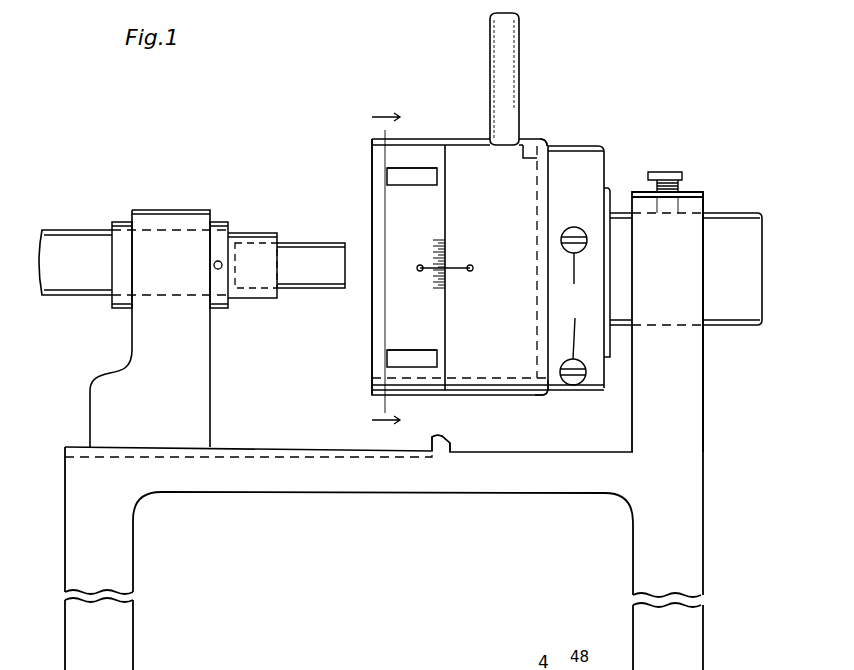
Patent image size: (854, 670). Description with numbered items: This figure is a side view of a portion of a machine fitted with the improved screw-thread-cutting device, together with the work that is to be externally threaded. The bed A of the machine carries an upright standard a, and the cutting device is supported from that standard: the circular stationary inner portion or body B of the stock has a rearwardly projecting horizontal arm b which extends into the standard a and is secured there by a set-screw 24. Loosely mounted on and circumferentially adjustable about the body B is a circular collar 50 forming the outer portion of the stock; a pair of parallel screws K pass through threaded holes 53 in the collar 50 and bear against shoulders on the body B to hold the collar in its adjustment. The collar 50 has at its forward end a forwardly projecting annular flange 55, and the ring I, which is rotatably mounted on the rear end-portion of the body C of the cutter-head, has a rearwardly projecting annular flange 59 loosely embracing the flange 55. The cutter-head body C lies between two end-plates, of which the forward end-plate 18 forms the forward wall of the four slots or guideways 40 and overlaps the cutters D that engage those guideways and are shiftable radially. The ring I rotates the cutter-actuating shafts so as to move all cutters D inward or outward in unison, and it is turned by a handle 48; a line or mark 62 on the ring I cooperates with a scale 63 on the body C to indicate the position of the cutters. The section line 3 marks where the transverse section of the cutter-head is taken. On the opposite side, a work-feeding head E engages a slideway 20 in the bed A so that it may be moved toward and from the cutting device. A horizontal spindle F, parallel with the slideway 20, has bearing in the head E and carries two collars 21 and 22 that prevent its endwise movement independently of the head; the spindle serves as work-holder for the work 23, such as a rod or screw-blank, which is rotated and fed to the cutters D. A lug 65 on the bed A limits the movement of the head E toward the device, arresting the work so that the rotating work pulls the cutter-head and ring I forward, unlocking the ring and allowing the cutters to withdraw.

The section line 3— 3 is at (386, 270).
The forward end-plate 18 is at (372, 343).
The slideway 20 is at (290, 461).
The collar 21 is at (123, 222).
The collar 22 is at (228, 222).
The work 23 is at (312, 280).
The set-screw 24 is at (683, 175).
The slots or guideways 40 is at (415, 395).
The handle 48 is at (510, 54).
The collar 50 is at (592, 160).
The screw-threaded holes 53 is at (608, 373).
The annular flange 55 is at (527, 145).
The annular flange 59 is at (549, 395).
The line or mark 62 is at (465, 263).
The scale 63 is at (436, 246).
The lug 65 is at (435, 440).
The bed A is at (383, 485).
The body of the stock B is at (610, 188).
The body of the cutter-head C is at (414, 150).
The cutters D is at (412, 357).
The work-feeding head E is at (200, 358).
The spindle F is at (82, 287).
The ring I is at (504, 386).
The screws K is at (573, 306).
The upright standard a is at (696, 362).
The arm b is at (740, 329).